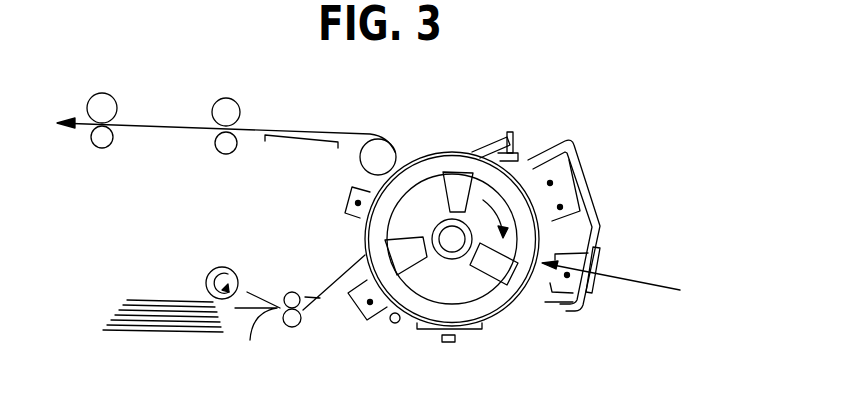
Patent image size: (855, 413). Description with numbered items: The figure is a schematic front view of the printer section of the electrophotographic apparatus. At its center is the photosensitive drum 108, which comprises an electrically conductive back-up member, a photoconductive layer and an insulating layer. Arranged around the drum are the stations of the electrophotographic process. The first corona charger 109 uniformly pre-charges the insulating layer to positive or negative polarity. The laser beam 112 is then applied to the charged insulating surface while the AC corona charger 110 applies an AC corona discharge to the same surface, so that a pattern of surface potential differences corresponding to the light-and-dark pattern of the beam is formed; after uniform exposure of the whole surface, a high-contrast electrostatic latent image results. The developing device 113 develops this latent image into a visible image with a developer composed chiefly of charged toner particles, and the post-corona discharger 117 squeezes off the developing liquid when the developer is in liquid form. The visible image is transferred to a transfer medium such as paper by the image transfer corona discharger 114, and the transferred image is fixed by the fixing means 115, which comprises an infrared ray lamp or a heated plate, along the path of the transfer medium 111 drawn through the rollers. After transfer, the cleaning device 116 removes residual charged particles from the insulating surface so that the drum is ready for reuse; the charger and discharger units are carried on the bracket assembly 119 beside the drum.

The photosensitive drum 108 is at (443, 152).
The first corona charger 109 is at (567, 170).
The AC corona charger 110 is at (558, 295).
The web / recording sheet 111 is at (70, 121).
The laser beam 112 is at (636, 278).
The developing device 113 is at (468, 335).
The image transfer corona discharger 114 is at (356, 203).
The fixing means 115 is at (300, 127).
The cleaning device 116 is at (494, 134).
The post-corona discharger 117 is at (370, 302).
The process unit bracket 119 is at (550, 139).